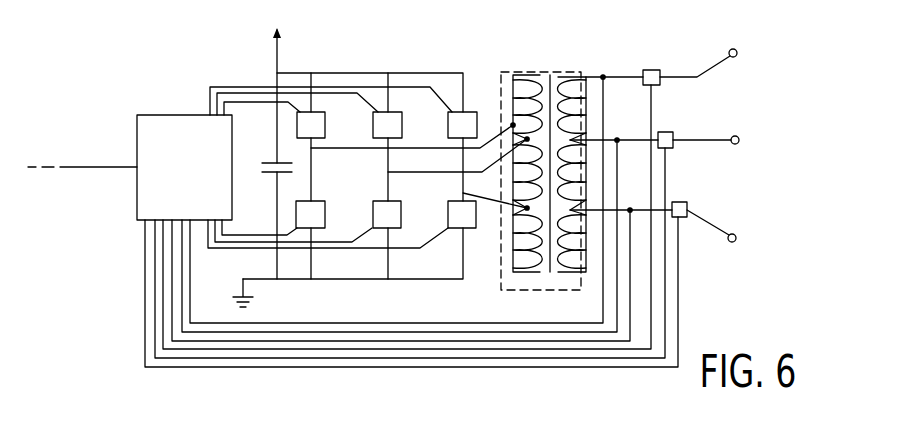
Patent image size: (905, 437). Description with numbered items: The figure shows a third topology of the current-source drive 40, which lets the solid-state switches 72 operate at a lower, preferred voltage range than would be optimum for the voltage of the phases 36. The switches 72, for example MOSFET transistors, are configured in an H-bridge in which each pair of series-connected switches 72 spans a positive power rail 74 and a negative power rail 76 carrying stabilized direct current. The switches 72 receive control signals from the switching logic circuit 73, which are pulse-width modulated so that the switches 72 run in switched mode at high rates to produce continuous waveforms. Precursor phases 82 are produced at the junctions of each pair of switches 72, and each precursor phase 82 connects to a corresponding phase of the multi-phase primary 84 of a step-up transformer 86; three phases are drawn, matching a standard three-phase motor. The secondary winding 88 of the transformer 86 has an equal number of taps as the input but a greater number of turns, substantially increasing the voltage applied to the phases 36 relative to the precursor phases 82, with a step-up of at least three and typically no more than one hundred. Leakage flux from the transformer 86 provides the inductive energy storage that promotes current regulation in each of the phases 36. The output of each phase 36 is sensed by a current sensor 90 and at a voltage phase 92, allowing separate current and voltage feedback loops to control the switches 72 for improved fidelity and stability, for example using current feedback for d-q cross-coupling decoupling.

The current-source drive 40 is at (152, 37).
The solid-state switches 72 is at (467, 111).
The switching logic circuit 73 is at (171, 175).
The positive power rail 74 is at (372, 73).
The negative power rail 76 is at (355, 279).
The precursor phases 82 is at (425, 172).
The multi-phase primary 84 is at (514, 72).
The step-up transformer 86 is at (551, 72).
The secondary winding 88 is at (586, 74).
The current sensor 90 is at (651, 70).
The voltage phase 92 is at (603, 75).
The phases 36 is at (683, 77).